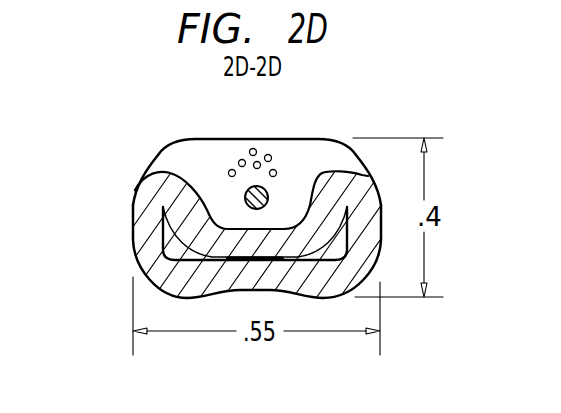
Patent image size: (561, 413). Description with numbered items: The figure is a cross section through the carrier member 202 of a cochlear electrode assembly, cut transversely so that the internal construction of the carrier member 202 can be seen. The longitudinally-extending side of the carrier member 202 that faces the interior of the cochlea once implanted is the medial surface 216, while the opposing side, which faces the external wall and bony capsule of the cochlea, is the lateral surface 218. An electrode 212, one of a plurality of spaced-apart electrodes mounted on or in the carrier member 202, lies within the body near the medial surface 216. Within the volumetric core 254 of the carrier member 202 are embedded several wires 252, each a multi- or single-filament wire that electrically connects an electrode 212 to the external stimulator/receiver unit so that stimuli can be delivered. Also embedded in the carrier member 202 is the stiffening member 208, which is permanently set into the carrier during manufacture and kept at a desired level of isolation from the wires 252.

The carrier member 202 is at (147, 118).
The stiffening member 208 is at (269, 196).
The electrode 212 is at (150, 250).
The medial surface 216 is at (245, 292).
The lateral surface 218 is at (297, 139).
The wire 252 is at (262, 146).
The volumetric core 254 is at (237, 221).